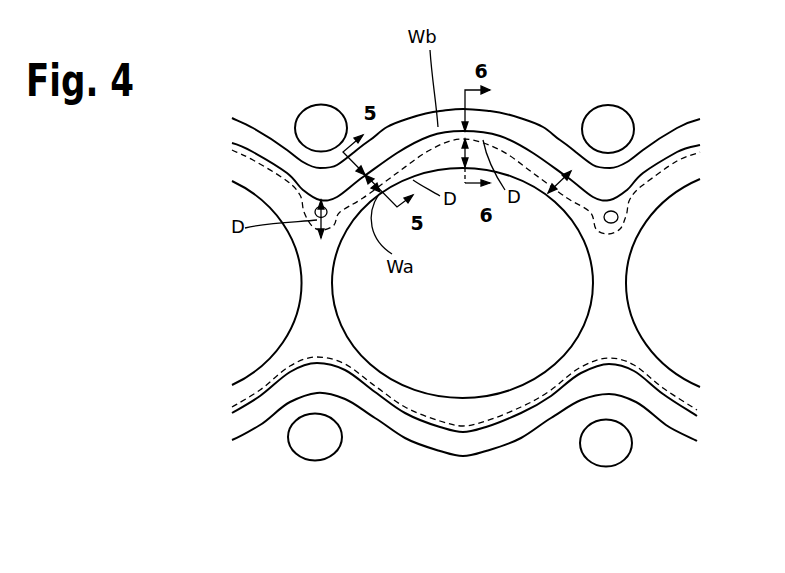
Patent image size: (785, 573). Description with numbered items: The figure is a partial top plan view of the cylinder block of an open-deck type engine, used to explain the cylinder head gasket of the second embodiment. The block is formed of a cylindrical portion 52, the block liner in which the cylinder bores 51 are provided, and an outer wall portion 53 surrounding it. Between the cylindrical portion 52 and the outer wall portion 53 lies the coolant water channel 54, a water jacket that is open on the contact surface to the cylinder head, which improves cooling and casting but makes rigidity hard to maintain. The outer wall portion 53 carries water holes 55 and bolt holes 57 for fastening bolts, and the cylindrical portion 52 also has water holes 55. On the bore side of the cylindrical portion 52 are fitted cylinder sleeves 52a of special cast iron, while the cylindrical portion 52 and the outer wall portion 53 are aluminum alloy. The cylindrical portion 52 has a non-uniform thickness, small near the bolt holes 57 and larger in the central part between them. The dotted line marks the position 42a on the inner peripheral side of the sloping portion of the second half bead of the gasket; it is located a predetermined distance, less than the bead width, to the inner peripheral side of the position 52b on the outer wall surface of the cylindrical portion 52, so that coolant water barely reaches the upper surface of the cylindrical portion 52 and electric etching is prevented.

The position on the inner peripheral side of the sloping portion of the second half 42a is at (548, 162).
The cylinder bore 51 is at (276, 311).
The cylindrical portion 52 is at (616, 307).
The cylinder sleeve 52a is at (493, 432).
The position on the outer peripheral side of the cylindrical portion 52b is at (503, 131).
The outer wall portion 53 is at (367, 83).
The coolant water channel 54 is at (417, 127).
The water hole 55 is at (619, 221).
The bolt hole 57 is at (622, 132).